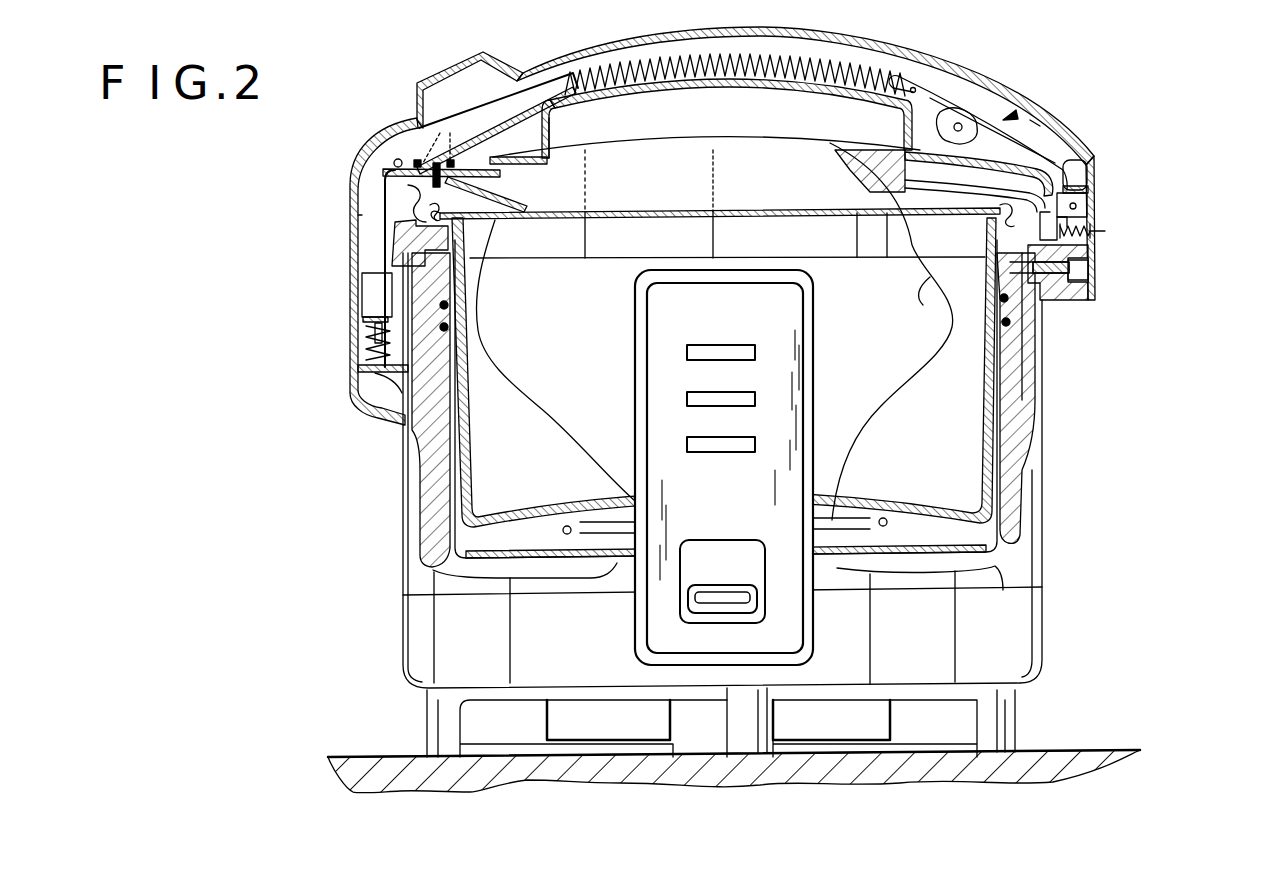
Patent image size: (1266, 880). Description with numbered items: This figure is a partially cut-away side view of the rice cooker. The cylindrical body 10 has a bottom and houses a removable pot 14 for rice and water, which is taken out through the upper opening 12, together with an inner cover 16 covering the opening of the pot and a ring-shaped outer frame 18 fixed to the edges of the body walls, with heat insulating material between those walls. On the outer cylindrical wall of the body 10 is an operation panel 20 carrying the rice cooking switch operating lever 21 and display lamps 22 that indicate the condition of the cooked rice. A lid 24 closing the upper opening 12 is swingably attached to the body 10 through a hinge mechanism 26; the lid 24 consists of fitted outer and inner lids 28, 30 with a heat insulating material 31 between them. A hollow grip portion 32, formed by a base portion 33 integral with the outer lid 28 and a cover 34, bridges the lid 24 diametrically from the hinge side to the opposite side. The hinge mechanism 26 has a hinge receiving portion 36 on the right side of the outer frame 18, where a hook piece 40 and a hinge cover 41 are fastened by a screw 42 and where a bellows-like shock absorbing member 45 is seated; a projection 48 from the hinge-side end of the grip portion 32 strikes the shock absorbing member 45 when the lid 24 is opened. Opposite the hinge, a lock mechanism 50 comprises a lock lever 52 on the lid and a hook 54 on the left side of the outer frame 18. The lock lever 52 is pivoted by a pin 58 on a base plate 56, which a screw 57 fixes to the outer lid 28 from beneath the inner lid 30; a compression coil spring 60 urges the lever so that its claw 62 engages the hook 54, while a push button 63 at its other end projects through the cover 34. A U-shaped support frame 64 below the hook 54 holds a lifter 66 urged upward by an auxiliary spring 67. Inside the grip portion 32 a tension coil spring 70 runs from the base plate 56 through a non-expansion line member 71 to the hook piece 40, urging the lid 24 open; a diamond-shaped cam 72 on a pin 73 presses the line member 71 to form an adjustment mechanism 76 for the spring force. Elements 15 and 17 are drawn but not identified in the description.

The body 10 is at (403, 531).
The upper opening 12 is at (714, 331).
The pot 14 is at (470, 297).
The pot support screw 15 is at (580, 533).
The inner cover 16 is at (504, 220).
The fastening screws right 17 is at (1000, 300).
The outer frame 18 is at (427, 315).
The operation panel 20 is at (805, 468).
The rice cooking switch operating lever 21 is at (732, 596).
The display lamps 22 is at (687, 353).
The lid 24 is at (700, 132).
The hinge mechanism 26 is at (798, 221).
The outer lid 28 is at (620, 148).
The inner lid 30 is at (527, 200).
The heat insulating material 31 is at (861, 148).
The grip portion 32 is at (860, 40).
The base portion 33 is at (780, 96).
The cover 34 is at (746, 48).
The hinge receiving portion 36 is at (1082, 156).
The hook piece 40 is at (1080, 200).
The hinge cover 41 is at (1090, 252).
The screw 42 is at (1050, 300).
The shock absorbing member 45 is at (1095, 243).
The projection 48 is at (1096, 172).
The lock mechanism 50 is at (356, 186).
The lock lever 52 is at (352, 206).
The hook 54 is at (388, 231).
The base plate 56 is at (550, 156).
The screw 57 is at (438, 132).
The pin 58 is at (393, 160).
The compression coil spring 60 is at (422, 140).
The claw 62 is at (365, 278).
The push button 63 is at (453, 73).
The support frame 64 is at (723, 421).
The lifter 66 is at (370, 307).
The auxiliary spring 67 is at (372, 349).
The tension coil spring 70 is at (930, 93).
The line member 71 is at (1057, 128).
The cam 72 is at (1005, 118).
The pin 73 is at (944, 130).
The adjustment mechanism 76 is at (1043, 118).